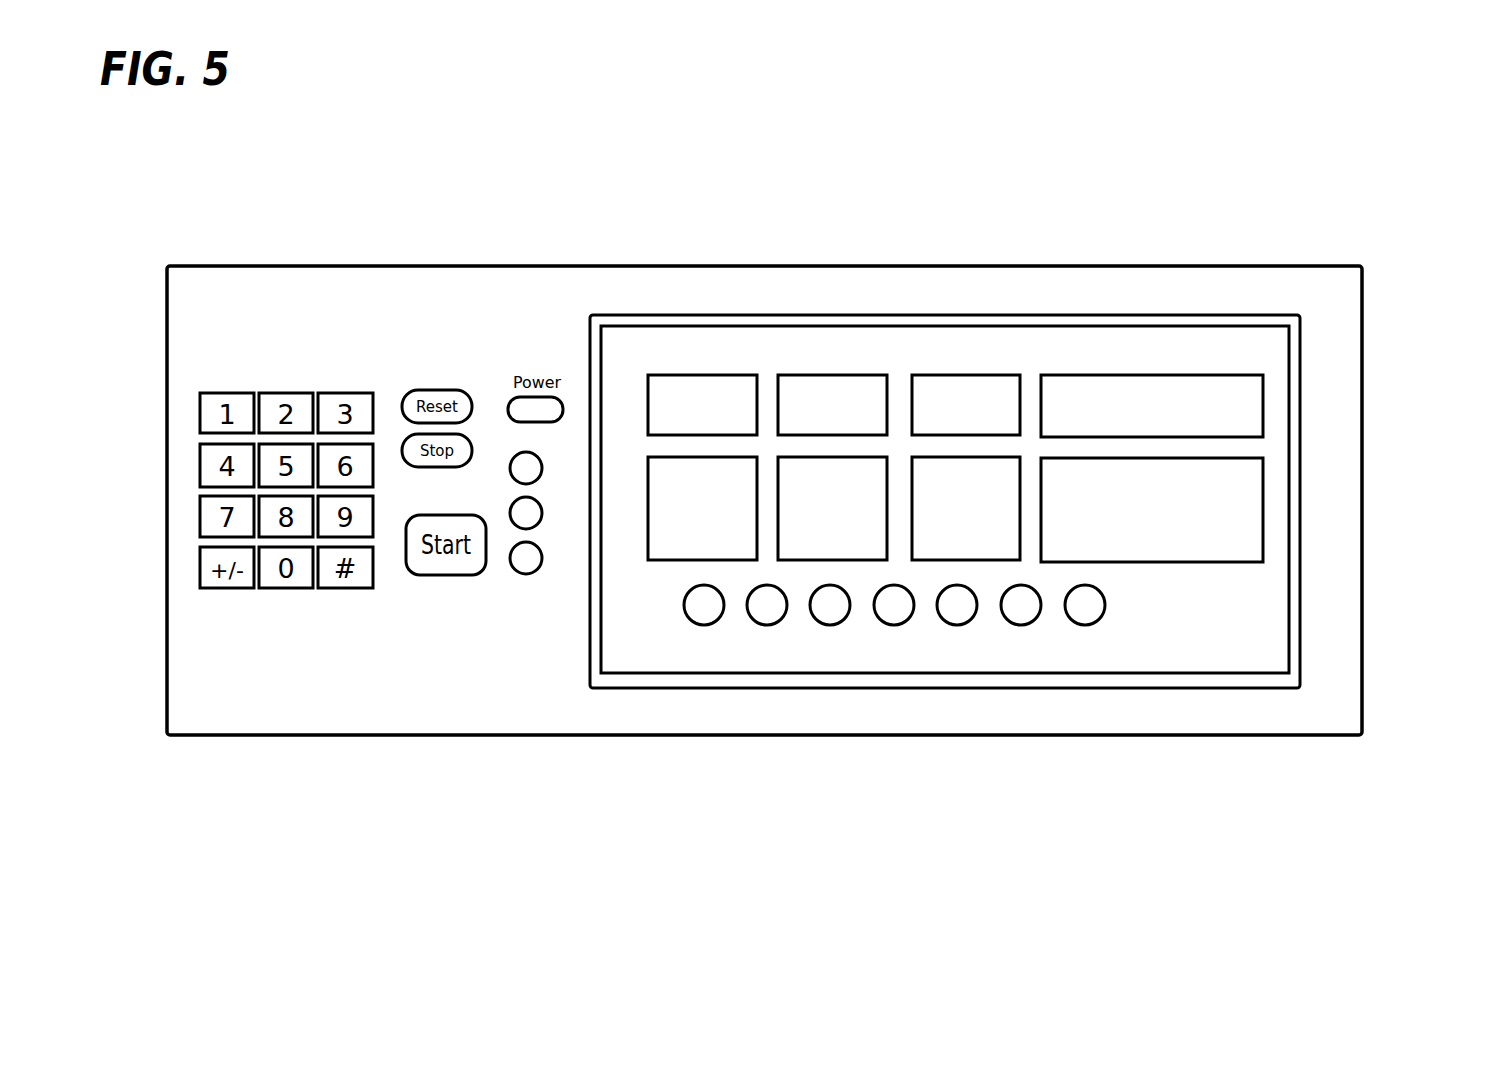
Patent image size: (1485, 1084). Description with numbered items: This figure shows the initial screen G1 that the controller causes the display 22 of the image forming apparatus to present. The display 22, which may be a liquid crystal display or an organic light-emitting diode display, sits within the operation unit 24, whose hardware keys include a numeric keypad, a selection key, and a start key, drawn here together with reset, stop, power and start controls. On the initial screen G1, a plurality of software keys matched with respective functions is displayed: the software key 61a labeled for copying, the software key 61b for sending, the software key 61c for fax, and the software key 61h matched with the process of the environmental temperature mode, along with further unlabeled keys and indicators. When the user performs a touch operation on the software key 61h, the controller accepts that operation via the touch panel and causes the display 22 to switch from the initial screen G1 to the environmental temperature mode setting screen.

The display 22 is at (1047, 313).
The operation unit 24 is at (1322, 258).
The software key 61a is at (702, 375).
The software key 61b is at (828, 375).
The software key 61c is at (962, 375).
The software key 61h is at (1263, 522).
The initial screen G1 is at (907, 647).